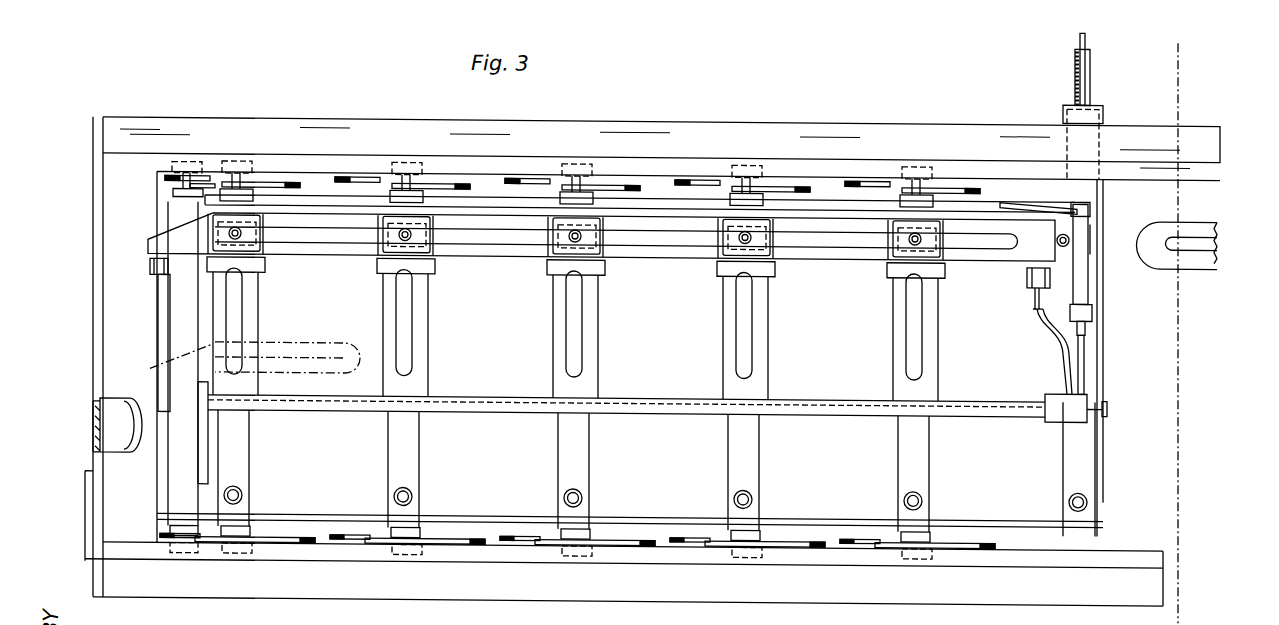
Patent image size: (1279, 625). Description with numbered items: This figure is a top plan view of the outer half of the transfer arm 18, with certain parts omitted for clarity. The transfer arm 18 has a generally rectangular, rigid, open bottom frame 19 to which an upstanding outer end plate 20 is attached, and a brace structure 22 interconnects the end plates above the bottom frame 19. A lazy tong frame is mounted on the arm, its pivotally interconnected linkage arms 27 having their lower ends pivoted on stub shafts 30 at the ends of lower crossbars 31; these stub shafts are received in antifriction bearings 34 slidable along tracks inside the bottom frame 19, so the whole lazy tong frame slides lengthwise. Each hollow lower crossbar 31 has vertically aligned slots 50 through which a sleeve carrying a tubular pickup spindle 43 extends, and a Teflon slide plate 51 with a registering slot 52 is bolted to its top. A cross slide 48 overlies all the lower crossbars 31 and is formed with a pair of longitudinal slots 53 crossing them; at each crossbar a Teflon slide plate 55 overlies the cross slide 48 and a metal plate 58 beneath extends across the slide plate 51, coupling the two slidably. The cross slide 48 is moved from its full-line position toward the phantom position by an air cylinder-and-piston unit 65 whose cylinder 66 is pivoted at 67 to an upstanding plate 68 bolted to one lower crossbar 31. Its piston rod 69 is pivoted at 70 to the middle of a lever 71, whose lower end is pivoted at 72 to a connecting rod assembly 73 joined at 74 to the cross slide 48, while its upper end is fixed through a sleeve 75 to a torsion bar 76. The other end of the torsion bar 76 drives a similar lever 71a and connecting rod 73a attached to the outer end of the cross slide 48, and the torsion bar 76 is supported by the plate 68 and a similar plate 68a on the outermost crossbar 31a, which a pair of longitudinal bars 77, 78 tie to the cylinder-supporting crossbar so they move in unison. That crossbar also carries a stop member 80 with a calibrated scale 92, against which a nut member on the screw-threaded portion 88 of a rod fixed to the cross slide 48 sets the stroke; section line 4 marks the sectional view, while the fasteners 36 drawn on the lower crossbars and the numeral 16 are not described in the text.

The section line 4- 4 is at (1160, 46).
The base frame 16 is at (628, 611).
The transfer arm 18 is at (817, 114).
The bottom frame 19 is at (420, 125).
The outer end plate 20 is at (93, 348).
The brace structure 22 is at (100, 413).
The linkage arms 27 is at (432, 182).
The stub shafts 30 is at (592, 182).
The lower crossbar 31 is at (420, 456).
The crossbar 31a is at (170, 480).
The antifriction bearings 34 is at (577, 162).
The pivot bolt 36 is at (243, 490).
The pickup spindle 43 is at (225, 158).
The cross slide 48 is at (690, 257).
The longitudinal slots 50 is at (413, 352).
The slide plate 51 is at (382, 308).
The longitudinal slot 52 is at (413, 312).
The longitudinal slots 53 is at (470, 238).
The slide plate 55 is at (242, 250).
The metal plate 58 is at (382, 265).
The air cylinder-and-piston unit 65 is at (1090, 278).
The cylinder 66 is at (1092, 232).
The pivotal connection 67 is at (1070, 202).
The upstanding plate 68 is at (1103, 370).
The plate 68a is at (208, 432).
The piston rod 69 is at (1085, 315).
The pivotal connection 70 is at (1085, 338).
The lever 71 is at (1060, 345).
The lever 71a is at (157, 345).
The pivotal connection 72 is at (1034, 302).
The connecting rod assembly 73 is at (1032, 288).
The connecting rod 73a is at (152, 275).
The pivotal connection 74 is at (1027, 268).
The sleeve 75 is at (1050, 418).
The torsion bar 76 is at (965, 412).
The longitudinal bar 77 is at (325, 510).
The longitudinal bar 78 is at (313, 195).
The stop member 80 is at (1116, 107).
The screw-threaded portion 88 is at (1075, 68).
The scale 92 is at (1080, 32).